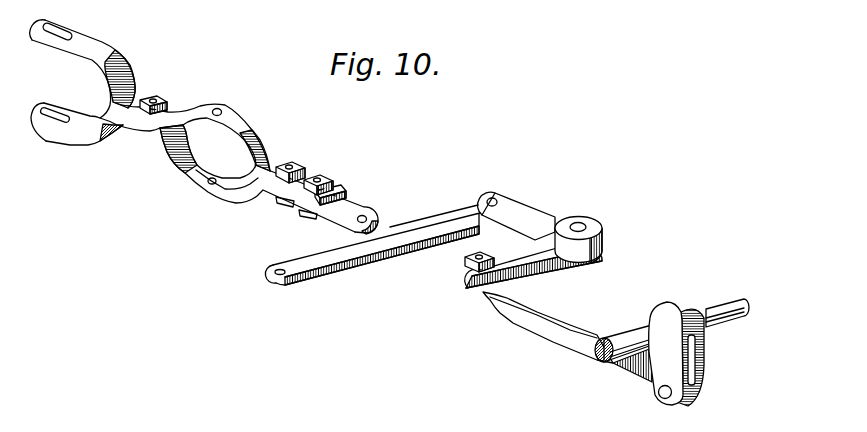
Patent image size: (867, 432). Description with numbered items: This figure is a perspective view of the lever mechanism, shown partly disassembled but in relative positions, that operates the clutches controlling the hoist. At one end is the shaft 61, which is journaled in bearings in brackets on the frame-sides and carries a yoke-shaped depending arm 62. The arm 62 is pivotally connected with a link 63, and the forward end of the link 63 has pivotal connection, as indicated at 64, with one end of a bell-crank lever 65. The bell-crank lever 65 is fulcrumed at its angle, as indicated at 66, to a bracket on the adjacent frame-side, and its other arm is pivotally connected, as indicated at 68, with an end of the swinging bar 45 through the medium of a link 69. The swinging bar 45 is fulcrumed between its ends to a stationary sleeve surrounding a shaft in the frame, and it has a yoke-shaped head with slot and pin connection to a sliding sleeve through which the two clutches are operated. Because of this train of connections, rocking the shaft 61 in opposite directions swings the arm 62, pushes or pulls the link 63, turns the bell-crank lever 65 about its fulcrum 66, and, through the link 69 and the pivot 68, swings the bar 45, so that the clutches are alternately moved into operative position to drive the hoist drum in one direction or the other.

The swinging bar 45 is at (280, 145).
The pivotal connection 68 is at (496, 199).
The bell-crank lever 65 is at (540, 220).
The fulcrum 66 is at (581, 225).
The pivotal connection 64 is at (463, 268).
The link 69 is at (370, 245).
The shaft 61 is at (721, 308).
The yoke-shaped depending arm 62 is at (705, 354).
The link 63 is at (630, 365).